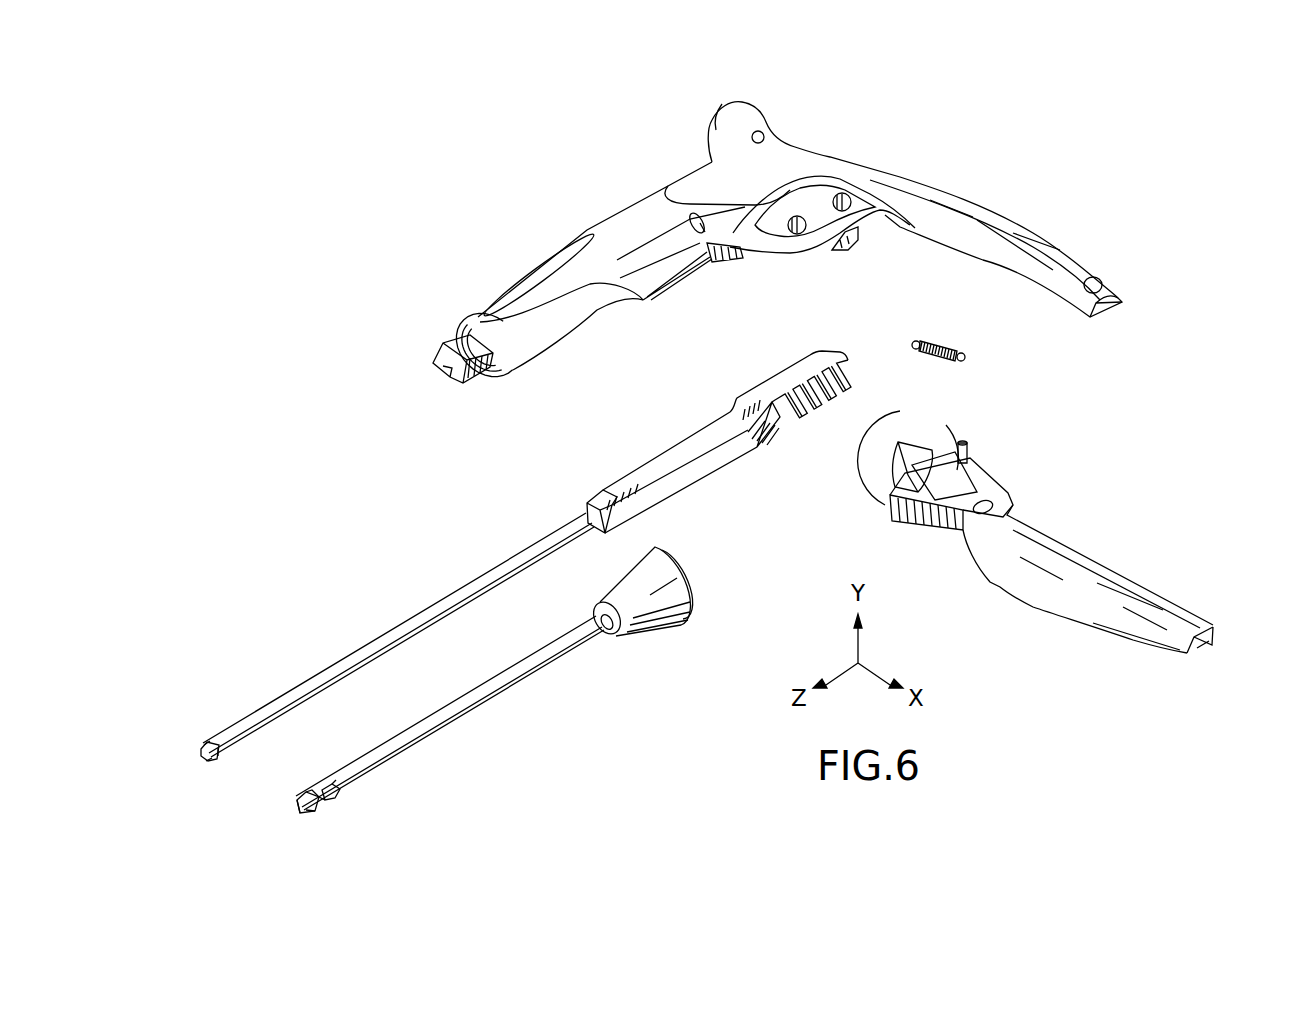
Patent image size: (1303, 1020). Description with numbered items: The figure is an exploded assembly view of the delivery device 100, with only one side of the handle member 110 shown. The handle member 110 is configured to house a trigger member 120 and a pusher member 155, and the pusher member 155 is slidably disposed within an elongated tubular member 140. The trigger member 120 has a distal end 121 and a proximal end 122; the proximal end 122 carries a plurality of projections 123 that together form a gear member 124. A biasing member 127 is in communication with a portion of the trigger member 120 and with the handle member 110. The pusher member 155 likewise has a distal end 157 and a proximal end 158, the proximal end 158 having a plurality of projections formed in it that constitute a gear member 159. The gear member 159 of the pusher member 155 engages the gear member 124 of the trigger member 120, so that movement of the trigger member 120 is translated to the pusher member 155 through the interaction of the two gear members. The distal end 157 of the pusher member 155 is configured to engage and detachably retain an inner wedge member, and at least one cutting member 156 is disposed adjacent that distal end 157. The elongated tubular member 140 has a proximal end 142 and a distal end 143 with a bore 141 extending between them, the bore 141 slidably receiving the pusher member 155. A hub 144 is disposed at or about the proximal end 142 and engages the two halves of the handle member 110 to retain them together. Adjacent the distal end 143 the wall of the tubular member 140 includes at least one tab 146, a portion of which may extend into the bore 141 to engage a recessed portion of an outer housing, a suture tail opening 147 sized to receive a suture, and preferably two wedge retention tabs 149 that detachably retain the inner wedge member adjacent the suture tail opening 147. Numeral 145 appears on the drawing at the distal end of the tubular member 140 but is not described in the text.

The delivery device 100 is at (418, 230).
The handle member 110 is at (833, 153).
The trigger member 120 is at (1043, 590).
The distal end 121 is at (1214, 642).
The proximal end 122 is at (968, 472).
The projections 123 is at (900, 447).
The gear member 124 is at (903, 411).
The biasing member 127 is at (940, 343).
The elongated tubular member 140 is at (523, 686).
The bore 141 is at (298, 798).
The proximal end 142 is at (607, 642).
The distal end 143 is at (303, 810).
The hub 144 is at (678, 620).
The coupling tab 145 is at (317, 811).
The tab 146 is at (300, 796).
The suture tail opening 147 is at (330, 802).
The wedge retention tabs 149 is at (320, 788).
The pusher member 155 is at (375, 650).
The cutting member 156 is at (209, 740).
The distal end 157 is at (201, 749).
The proximal end 158 is at (792, 368).
The gear member 159 is at (858, 392).